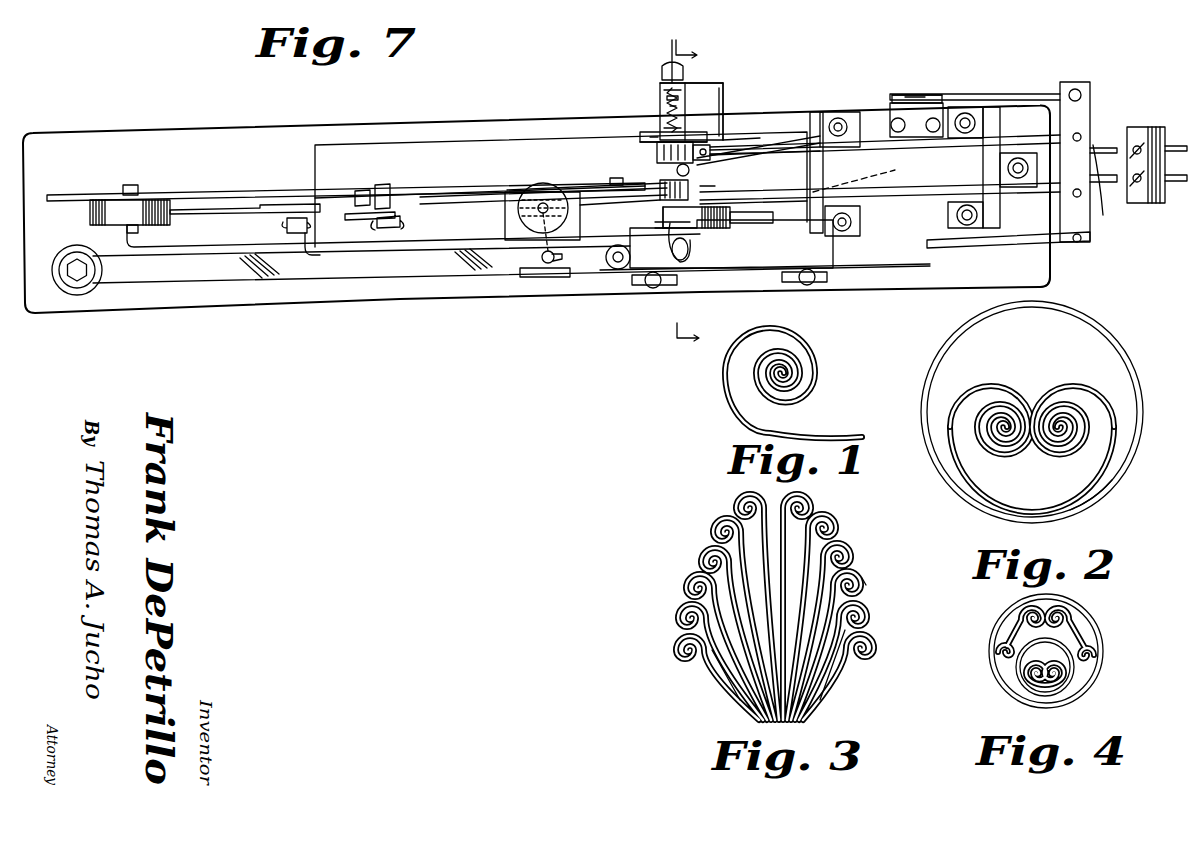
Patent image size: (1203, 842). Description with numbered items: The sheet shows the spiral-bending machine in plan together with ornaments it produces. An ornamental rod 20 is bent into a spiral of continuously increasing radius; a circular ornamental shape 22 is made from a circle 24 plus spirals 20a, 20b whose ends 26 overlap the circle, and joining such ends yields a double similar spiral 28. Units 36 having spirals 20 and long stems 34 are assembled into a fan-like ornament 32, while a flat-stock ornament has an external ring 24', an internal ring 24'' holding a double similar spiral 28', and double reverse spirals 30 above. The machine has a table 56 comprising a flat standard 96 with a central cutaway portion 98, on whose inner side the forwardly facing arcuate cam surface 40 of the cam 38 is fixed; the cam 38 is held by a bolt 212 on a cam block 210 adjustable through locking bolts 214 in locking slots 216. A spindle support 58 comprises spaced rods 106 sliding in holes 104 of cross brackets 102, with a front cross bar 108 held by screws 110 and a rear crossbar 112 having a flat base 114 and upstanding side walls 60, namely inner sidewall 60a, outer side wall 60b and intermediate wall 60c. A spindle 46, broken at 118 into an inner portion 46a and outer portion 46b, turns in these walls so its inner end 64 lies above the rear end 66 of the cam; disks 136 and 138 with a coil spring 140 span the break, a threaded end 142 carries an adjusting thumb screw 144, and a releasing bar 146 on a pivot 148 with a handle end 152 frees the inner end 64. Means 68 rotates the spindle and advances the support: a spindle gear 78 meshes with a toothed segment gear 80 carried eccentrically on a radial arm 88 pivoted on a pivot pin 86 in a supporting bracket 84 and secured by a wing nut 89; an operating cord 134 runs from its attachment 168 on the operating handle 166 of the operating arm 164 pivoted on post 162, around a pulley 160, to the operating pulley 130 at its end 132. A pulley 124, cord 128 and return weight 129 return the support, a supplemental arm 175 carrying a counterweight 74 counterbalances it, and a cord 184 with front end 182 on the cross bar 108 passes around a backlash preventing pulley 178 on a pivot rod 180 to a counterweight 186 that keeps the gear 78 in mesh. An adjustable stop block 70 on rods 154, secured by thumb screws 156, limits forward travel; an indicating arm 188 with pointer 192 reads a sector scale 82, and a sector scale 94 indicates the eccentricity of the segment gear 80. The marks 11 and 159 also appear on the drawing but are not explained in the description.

In FIG. 7, the adjusting thumb screw 144 is at (670, 64).
In FIG. 7, the threaded end 142 is at (700, 52).
In FIG. 7, the upstanding outer side wall 60b is at (722, 92).
In FIG. 7, the outer spindle portion 46b is at (662, 92).
In FIG. 7, the supplemental disk 138 is at (724, 95).
In FIG. 7, the flat base 114 is at (726, 112).
In FIG. 7, the rear crossbar 112 is at (726, 125).
In FIG. 7, the broken portion 118 is at (662, 105).
In FIG. 7, the pulley 124 is at (655, 133).
In FIG. 7, the disk 136 is at (665, 131).
In FIG. 7, the coil spring means 140 is at (691, 111).
In FIG. 7, the cord 128 is at (645, 138).
In FIG. 7, the return weight 129 is at (610, 148).
In FIG. 7, the spindle gear 78 is at (660, 170).
In FIG. 7, the inner main spindle portion 46a is at (680, 173).
In FIG. 7, the means to rotate spindle and move support 68 is at (640, 181).
In FIG. 7, the upstanding intermediate outer wall 60c is at (742, 140).
In FIG. 7, the spindle inner end releasing bar 146 is at (716, 157).
In FIG. 7, the pivot 148 is at (760, 160).
In FIG. 7, the cutaway portion 98 is at (488, 147).
In FIG. 7, the pulley 160 is at (515, 200).
In FIG. 7, the sector shaped scale 94 is at (560, 200).
In FIG. 7, the radial arm 88 is at (468, 197).
In FIG. 7, the pointer 192 is at (357, 192).
In FIG. 7, the indicating arm 188 is at (386, 187).
In FIG. 7, the supplemental arm 175 is at (222, 196).
In FIG. 7, the counterweight 74 is at (89, 214).
In FIG. 7, the supporting bracket 84 is at (218, 216).
In FIG. 7, the wing nut 89 is at (287, 226).
In FIG. 7, the sector shaped scale member 82 is at (355, 219).
In FIG. 7, the pivot pin 86 is at (306, 250).
In FIG. 7, the operating arm 164 is at (435, 250).
In FIG. 7, the cord attachment 168 is at (540, 277).
In FIG. 7, the operating handle 166 is at (615, 269).
In FIG. 7, the operating cord 134 is at (622, 197).
In FIG. 7, the toothed segment gear 80 is at (658, 200).
In FIG. 7, the inner end 64 is at (672, 224).
In FIG. 7, the rear end of cam 66 is at (669, 240).
In FIG. 7, the bolt 212 is at (672, 250).
In FIG. 7, the spindle 46 is at (690, 245).
In FIG. 7, the side walls 60 is at (716, 230).
In FIG. 7, the upstanding inner sidewall 60a is at (735, 235).
In FIG. 7, the cam 38 is at (662, 280).
In FIG. 7, the longitudinal locking slots 216 is at (640, 288).
In FIG. 7, the locking bolts 214 is at (660, 290).
In FIG. 7, the table 56 is at (902, 290).
In FIG. 7, the cam block 210 is at (836, 255).
In FIG. 7, the arcuate cam surface 40 is at (773, 218).
In FIG. 7, the spindle support 58 is at (897, 215).
In FIG. 7, the supporting cross brackets 102 is at (848, 118).
In FIG. 7, the backlash preventing counterweight 186 is at (895, 102).
In FIG. 7, the pivot rod 180 is at (935, 95).
In FIG. 7, the backlash preventing pulley 178 is at (942, 97).
In FIG. 7, the cord 184 is at (1003, 96).
In FIG. 7, the front end of cord 182 is at (1060, 96).
In FIG. 7, the front cross bar 108 is at (1083, 116).
In FIG. 7, the adjustable stop block 70 is at (1155, 128).
In FIG. 7, the adjusting thumb screws 156 is at (1136, 146).
In FIG. 7, the rods 154 is at (1138, 155).
In FIG. 7, the screws 110 is at (1104, 216).
In FIG. 7, the holes 104 is at (880, 170).
In FIG. 7, the spaced rods 106 is at (940, 190).
In FIG. 7, the releasing handle 152 is at (819, 163).
In FIG. 7, the rod 159 is at (716, 176).
In FIG. 7, the end of operating cord 132 is at (748, 176).
In FIG. 7, the operating pulley 130 is at (740, 192).
In FIG. 7, the standard 96 is at (1051, 271).
In FIG. 7, the post 162 is at (85, 297).
In FIG. 7, the section line 11 is at (700, 196).
In FIG. 1, the ornamental rod 20 is at (767, 426).
In FIG. 3, the ornamental rod 20 is at (876, 641).
In FIG. 2, the ornamental shape 22 is at (1142, 410).
In FIG. 2, the circle 24 is at (1041, 412).
In FIG. 2, the spiral 20a is at (962, 480).
In FIG. 2, the spiral 20b is at (1120, 452).
In FIG. 2, the ends of spiral 26 is at (1057, 512).
In FIG. 2, the double similar spiral 28 is at (1091, 506).
In FIG. 3, the ornament 32 is at (859, 565).
In FIG. 3, the stems 34 is at (735, 668).
In FIG. 3, the units 36 is at (825, 675).
In FIG. 4, the double reverse spirals 30 is at (1018, 617).
In FIG. 4, the external ring 24' is at (1065, 651).
In FIG. 4, the internal ring 24'' is at (1080, 667).
In FIG. 4, the double similar spiral 28' is at (1069, 690).